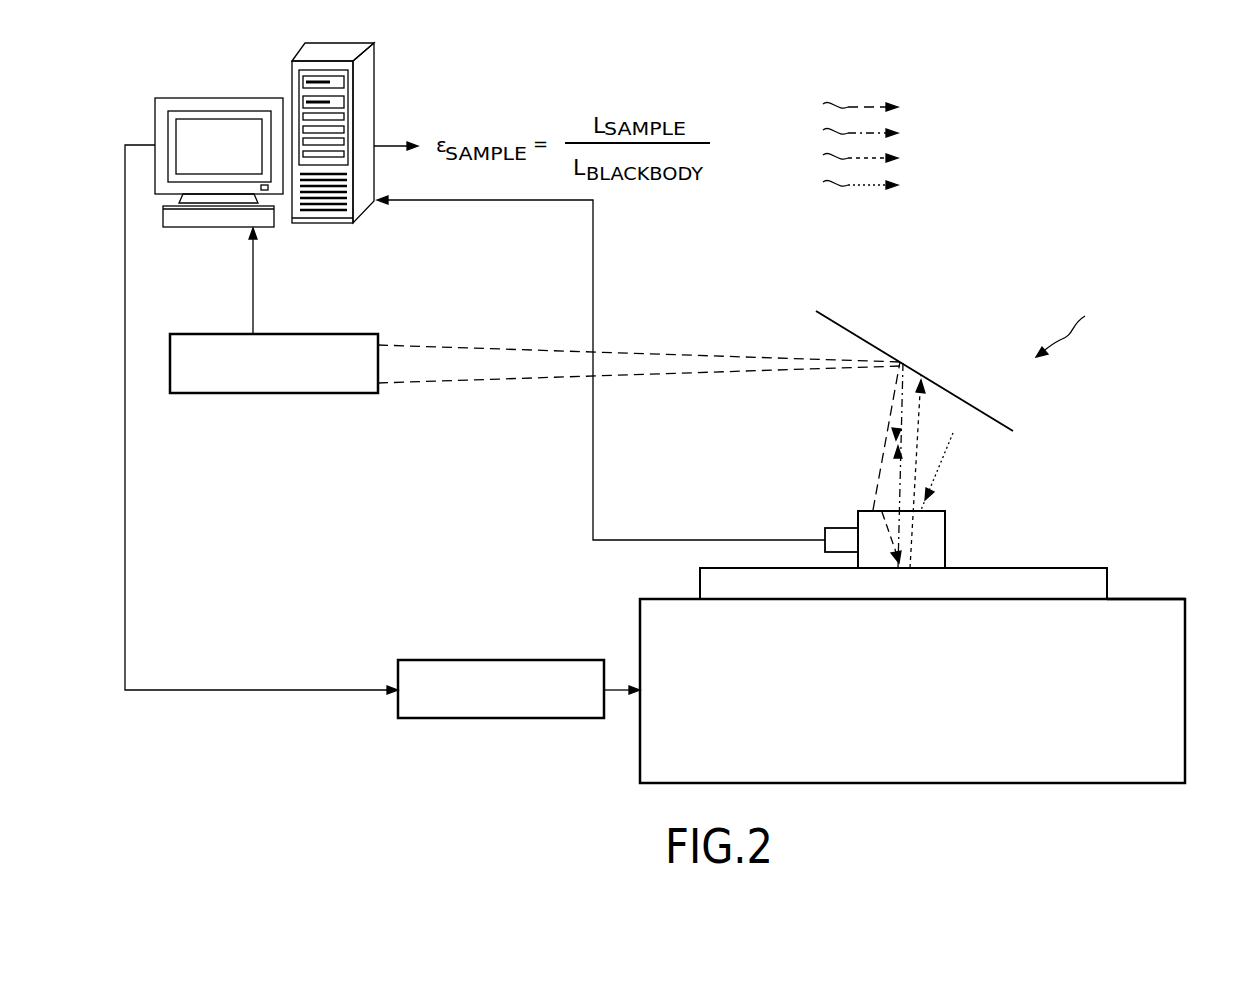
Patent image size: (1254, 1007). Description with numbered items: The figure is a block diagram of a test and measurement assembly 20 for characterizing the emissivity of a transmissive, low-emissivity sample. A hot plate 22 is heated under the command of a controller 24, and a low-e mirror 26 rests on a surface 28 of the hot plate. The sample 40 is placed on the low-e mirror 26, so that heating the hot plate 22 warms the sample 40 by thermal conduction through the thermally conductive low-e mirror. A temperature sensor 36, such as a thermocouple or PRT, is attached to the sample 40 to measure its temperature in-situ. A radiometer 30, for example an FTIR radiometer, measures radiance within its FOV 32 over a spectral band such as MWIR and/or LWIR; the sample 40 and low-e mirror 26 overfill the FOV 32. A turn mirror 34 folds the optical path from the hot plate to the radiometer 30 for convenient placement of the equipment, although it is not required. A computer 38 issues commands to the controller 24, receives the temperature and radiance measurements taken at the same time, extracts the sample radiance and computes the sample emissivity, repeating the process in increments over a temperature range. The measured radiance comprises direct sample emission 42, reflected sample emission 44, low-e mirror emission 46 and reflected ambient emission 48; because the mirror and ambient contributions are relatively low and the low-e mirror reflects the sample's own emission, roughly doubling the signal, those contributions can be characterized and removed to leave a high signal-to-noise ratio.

The test and measurement assembly 20 is at (1075, 329).
The hot plate 22 is at (906, 736).
The controller 24 is at (452, 660).
The low-e mirror 26 is at (1005, 568).
The surface of the hot plate 28 is at (1143, 599).
The radiometer 30 is at (340, 334).
The FOV 32 is at (872, 500).
The turn mirror 34 is at (866, 333).
The temperature sensor 36 is at (838, 528).
The computer 38 is at (224, 98).
The sample 40 is at (945, 562).
The direct sample emission 42 is at (995, 329).
The reflected sample emission 44 is at (1017, 344).
The low-e mirror emission 46 is at (997, 357).
The reflected ambient emission 48 is at (959, 341).